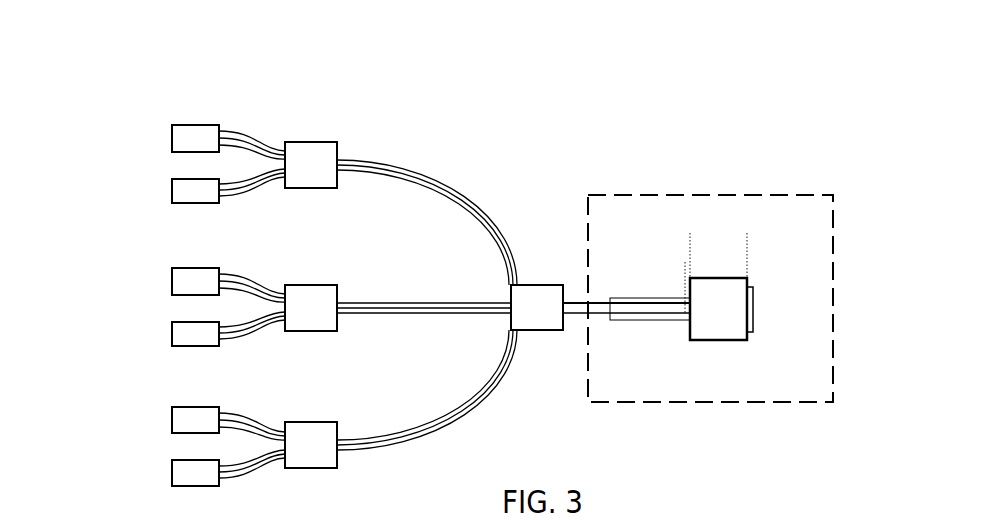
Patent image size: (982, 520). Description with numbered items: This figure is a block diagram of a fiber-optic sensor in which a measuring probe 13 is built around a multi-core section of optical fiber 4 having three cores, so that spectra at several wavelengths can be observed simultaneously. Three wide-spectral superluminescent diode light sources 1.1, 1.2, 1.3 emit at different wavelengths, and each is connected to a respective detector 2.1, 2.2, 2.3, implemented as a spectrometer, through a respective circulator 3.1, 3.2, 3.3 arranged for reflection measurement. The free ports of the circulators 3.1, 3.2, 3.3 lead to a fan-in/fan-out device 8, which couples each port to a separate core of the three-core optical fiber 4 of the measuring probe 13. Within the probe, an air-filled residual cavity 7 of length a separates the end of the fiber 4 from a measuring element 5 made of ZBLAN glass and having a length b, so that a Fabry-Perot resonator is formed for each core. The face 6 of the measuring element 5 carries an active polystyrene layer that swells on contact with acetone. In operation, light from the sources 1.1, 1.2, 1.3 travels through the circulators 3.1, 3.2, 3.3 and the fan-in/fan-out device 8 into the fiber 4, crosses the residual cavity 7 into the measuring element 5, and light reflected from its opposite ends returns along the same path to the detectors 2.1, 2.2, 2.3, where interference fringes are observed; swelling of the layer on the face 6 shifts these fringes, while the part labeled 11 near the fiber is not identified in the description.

The first light source 1.1 is at (170, 138).
The second light source 2.1 is at (170, 188).
The first coupling unit 3.1 is at (307, 142).
The first light source 1.2 is at (170, 282).
The second light source 2.2 is at (170, 337).
The second coupling unit 3.2 is at (307, 285).
The first light source 1.3 is at (170, 420).
The second light source 2.3 is at (170, 472).
The third coupling unit 3.3 is at (307, 422).
The fiber combiner 8 is at (537, 285).
The output unit 13 is at (730, 195).
The optical fiber 7 is at (687, 297).
The fiber core 4 is at (588, 312).
The fiber cladding 11 is at (638, 320).
The optical element 5 is at (707, 343).
The output face 6 is at (753, 328).
The distance a is at (690, 268).
The width b is at (762, 238).